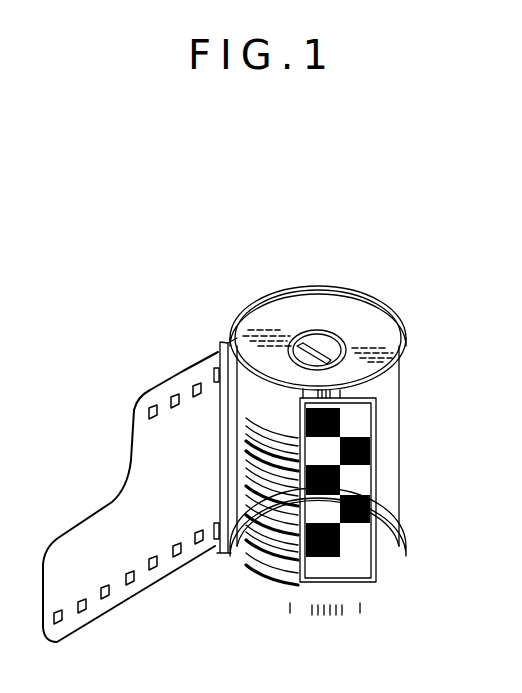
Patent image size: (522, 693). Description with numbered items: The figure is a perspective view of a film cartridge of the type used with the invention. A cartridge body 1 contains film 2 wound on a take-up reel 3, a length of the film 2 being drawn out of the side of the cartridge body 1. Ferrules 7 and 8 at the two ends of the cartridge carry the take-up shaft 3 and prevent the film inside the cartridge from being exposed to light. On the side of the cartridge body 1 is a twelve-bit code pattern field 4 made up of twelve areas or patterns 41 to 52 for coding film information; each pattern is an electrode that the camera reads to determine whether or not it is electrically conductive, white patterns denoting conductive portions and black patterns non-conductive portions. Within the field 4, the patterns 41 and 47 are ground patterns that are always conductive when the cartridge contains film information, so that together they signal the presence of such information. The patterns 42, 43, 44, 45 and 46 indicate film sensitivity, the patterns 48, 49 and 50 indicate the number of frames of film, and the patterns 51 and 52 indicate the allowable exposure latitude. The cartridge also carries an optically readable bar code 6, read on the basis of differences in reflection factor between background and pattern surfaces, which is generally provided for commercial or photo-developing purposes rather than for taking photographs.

The cartridge body 1 is at (392, 419).
The film 2 is at (68, 554).
The take-up reel 3 is at (333, 341).
The code pattern field 4 is at (355, 578).
The bar code 6 is at (246, 581).
The ferrule 7 is at (372, 303).
The ferrule 8 is at (373, 578).
The ground pattern 41 is at (321, 580).
The film sensitivity pattern 42 is at (322, 553).
The film sensitivity pattern 43 is at (297, 505).
The film sensitivity pattern 44 is at (295, 456).
The film sensitivity pattern 45 is at (293, 436).
The film sensitivity pattern 46 is at (297, 404).
The ground pattern 47 is at (378, 594).
The frame number pattern 48 is at (365, 563).
The frame number pattern 49 is at (374, 500).
The frame number pattern 50 is at (374, 470).
The exposure latitude pattern 51 is at (376, 444).
The exposure latitude pattern 52 is at (384, 404).